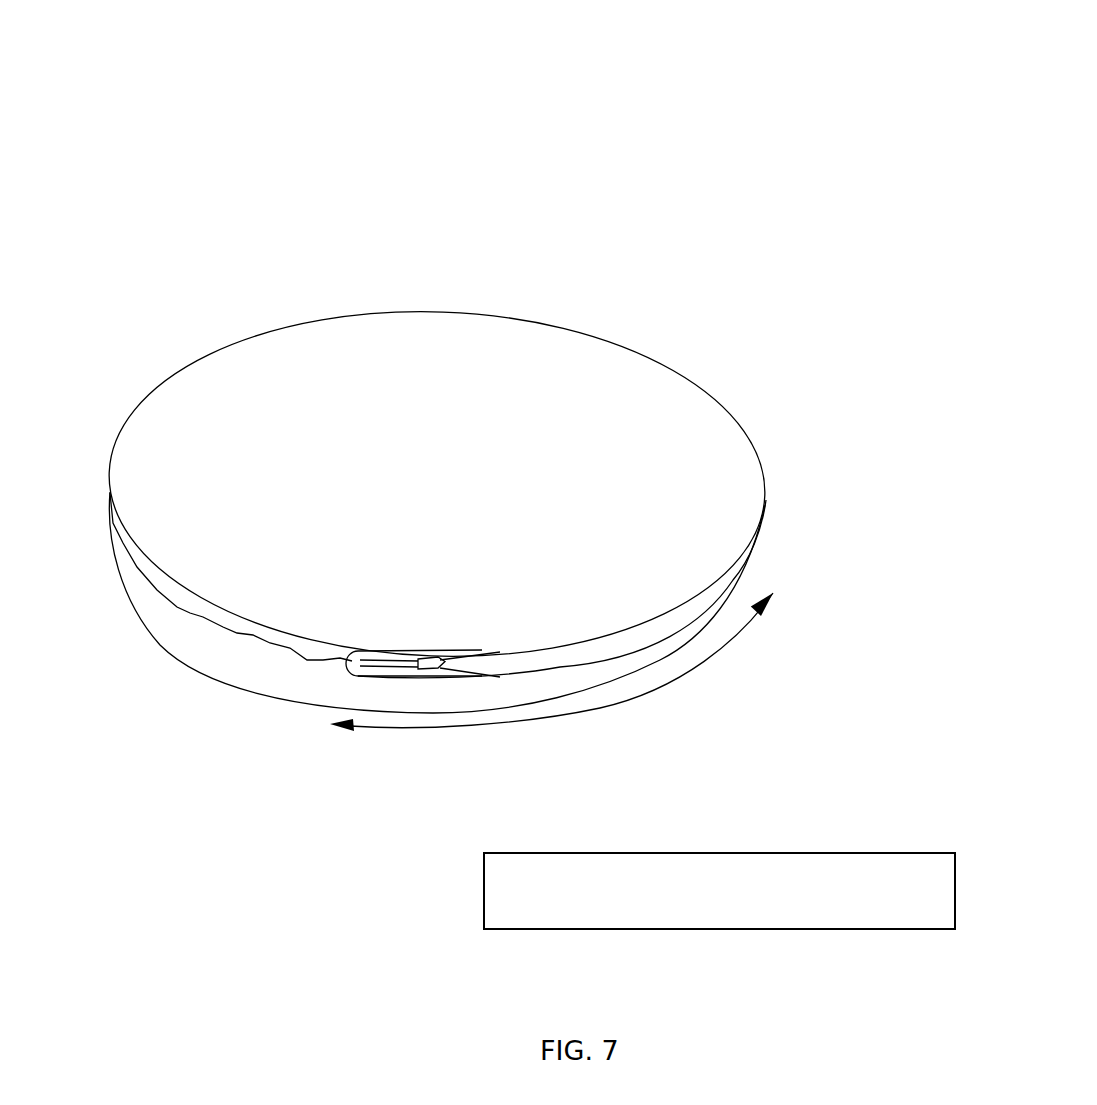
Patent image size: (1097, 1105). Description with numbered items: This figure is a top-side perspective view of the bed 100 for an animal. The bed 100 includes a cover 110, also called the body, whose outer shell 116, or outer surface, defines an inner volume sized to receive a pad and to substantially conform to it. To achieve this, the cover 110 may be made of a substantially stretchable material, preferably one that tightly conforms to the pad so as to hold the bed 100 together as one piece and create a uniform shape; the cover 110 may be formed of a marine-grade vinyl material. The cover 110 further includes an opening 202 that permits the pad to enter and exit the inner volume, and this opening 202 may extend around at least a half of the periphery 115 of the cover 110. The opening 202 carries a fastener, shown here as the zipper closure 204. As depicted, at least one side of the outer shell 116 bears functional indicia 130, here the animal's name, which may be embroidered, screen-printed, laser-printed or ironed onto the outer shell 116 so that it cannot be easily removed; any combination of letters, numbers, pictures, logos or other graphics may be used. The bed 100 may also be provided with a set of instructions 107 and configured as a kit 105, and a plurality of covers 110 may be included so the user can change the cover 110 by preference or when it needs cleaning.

The bed 100 is at (858, 52).
The kit 105 is at (888, 82).
The set of instructions 107 is at (495, 876).
The cover 110 is at (672, 412).
The periphery 115 is at (695, 680).
The outer shell 116 is at (722, 488).
The functional indicia 130 is at (358, 458).
The opening 202 is at (733, 576).
The zipper closure 204 is at (406, 673).